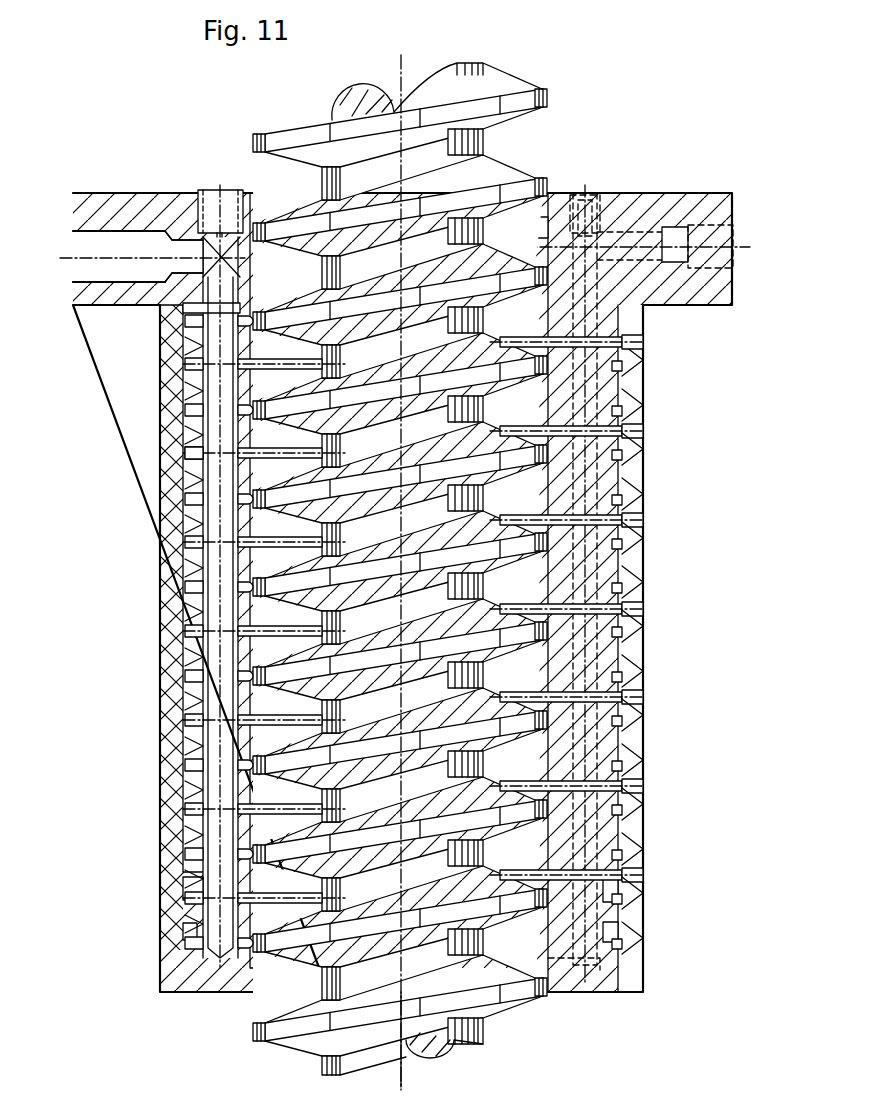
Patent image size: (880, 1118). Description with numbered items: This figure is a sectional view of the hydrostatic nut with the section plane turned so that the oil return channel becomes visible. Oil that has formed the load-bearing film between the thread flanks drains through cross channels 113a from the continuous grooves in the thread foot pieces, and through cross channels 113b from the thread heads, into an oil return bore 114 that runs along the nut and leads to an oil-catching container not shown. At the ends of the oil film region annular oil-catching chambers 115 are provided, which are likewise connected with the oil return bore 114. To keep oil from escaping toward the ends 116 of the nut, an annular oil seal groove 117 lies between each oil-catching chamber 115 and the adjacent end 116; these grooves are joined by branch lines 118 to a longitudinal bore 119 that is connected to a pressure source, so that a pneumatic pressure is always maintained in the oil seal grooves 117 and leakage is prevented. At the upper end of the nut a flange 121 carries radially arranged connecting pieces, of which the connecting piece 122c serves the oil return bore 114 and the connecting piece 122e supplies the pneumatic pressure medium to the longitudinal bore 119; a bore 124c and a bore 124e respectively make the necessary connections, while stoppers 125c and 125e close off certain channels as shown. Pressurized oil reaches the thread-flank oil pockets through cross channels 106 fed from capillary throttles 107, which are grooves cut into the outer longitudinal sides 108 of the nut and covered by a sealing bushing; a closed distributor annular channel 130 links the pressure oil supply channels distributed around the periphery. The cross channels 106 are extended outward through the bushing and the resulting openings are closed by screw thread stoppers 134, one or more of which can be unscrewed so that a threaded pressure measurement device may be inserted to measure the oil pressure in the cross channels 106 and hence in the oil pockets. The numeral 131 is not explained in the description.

The cross channels 106 is at (560, 445).
The capillary throttles 107 is at (193, 528).
The outer longitudinal sides 108 is at (632, 655).
The cross channels 113a is at (195, 410).
The cross channels 113b is at (238, 592).
The oil return bore 114 is at (205, 455).
The oil-catching chambers 115 is at (213, 311).
The ends 116 is at (255, 190).
The oil seal groove 117 is at (540, 180).
The branch lines 118 is at (585, 193).
The longitudinal bore 119 is at (630, 546).
The flange 121 is at (598, 205).
The connecting piece 122c is at (83, 247).
The connecting piece 122e is at (740, 237).
The bore 124c is at (187, 245).
The bore 124e is at (623, 203).
The stopper 125c is at (213, 190).
The stopper 125e is at (600, 195).
The distributor annular channel 130 is at (185, 930).
The upper pocket 131 is at (185, 883).
The screw thread stoppers 134 is at (635, 609).